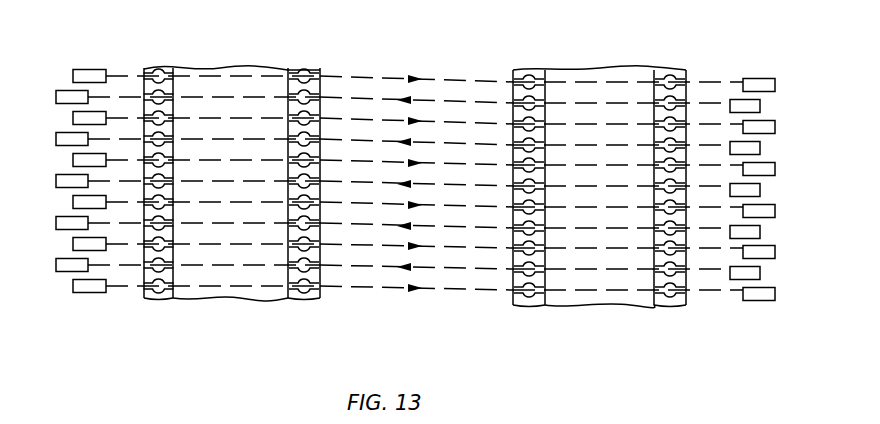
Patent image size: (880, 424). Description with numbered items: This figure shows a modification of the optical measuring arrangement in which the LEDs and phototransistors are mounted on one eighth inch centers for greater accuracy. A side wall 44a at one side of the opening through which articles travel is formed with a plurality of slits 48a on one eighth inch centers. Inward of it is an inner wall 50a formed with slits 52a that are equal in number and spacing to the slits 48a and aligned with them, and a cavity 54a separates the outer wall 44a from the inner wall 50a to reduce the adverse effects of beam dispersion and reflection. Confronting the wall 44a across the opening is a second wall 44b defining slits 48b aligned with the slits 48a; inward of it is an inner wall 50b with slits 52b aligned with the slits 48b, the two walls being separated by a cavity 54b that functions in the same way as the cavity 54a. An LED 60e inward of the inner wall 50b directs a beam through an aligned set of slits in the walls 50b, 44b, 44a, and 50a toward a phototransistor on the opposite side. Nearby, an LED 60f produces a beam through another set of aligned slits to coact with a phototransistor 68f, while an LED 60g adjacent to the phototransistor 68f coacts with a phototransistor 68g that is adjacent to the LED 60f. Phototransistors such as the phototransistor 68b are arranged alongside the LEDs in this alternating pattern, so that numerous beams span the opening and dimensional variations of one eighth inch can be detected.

The LED 60e is at (93, 68).
The phototransistor 68f is at (56, 96).
The LED 60g is at (73, 117).
The slits 52b is at (143, 72).
The cavity 54b is at (238, 68).
The slits 48b is at (322, 78).
The inner wall 50b is at (152, 300).
The second wall 44b is at (295, 300).
The slits 48a is at (517, 82).
The cavity 54a is at (603, 77).
The slits 52a is at (692, 83).
The side wall 44a is at (519, 305).
The inner wall 50a is at (660, 305).
The phototransistor 68b is at (760, 79).
The LED 60f is at (760, 106).
The phototransistor 68g is at (775, 127).